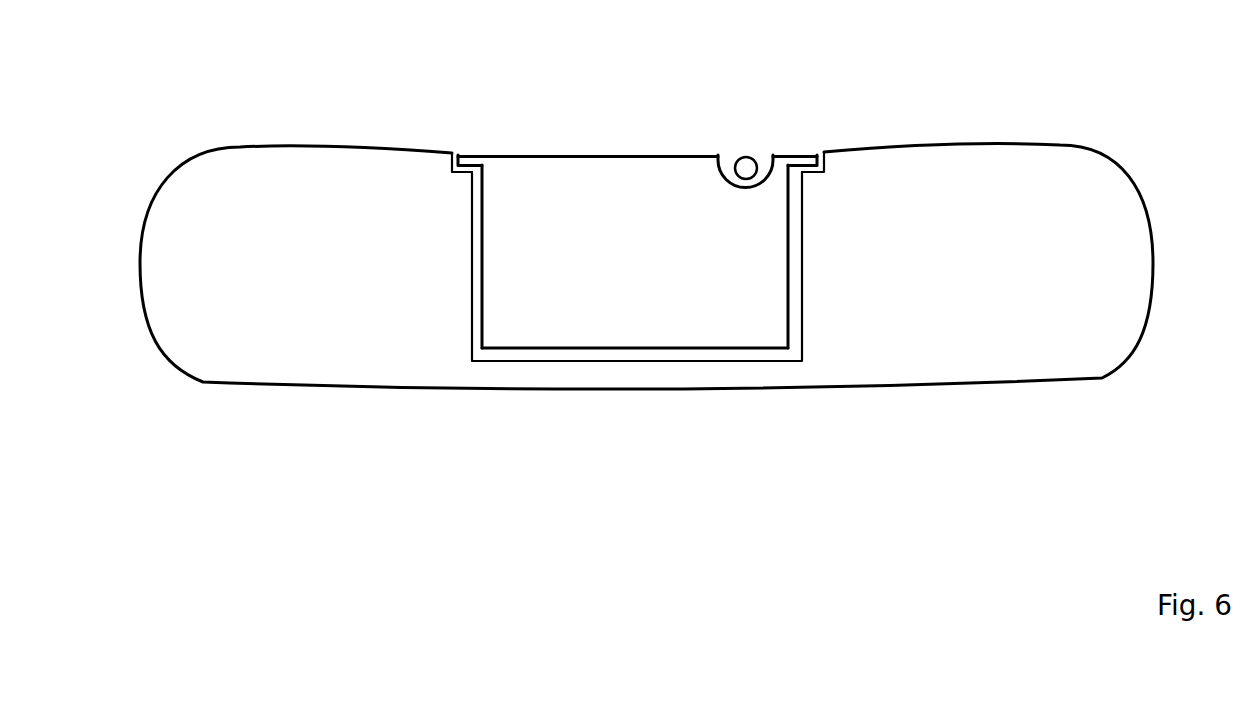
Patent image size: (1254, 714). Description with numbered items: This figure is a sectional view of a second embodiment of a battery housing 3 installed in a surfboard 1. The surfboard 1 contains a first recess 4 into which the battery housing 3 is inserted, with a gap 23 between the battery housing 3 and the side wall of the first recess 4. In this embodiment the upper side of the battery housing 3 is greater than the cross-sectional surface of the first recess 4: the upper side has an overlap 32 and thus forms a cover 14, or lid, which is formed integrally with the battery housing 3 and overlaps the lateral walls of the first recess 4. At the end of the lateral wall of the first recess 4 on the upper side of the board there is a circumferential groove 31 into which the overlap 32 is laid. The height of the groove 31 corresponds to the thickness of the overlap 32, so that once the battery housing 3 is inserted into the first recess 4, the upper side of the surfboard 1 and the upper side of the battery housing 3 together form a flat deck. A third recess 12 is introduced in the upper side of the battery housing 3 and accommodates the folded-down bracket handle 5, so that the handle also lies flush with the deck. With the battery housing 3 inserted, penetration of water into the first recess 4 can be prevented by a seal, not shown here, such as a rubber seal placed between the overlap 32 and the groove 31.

The surfboard 1 is at (950, 333).
The battery housing 3 is at (707, 317).
The first recess 4 is at (587, 353).
The bracket handle 5 is at (747, 168).
The third recess 12 is at (729, 157).
The cover 14 is at (557, 153).
The gap 23 is at (797, 300).
The circumferential groove 31 is at (452, 158).
The overlap 32 is at (473, 163).